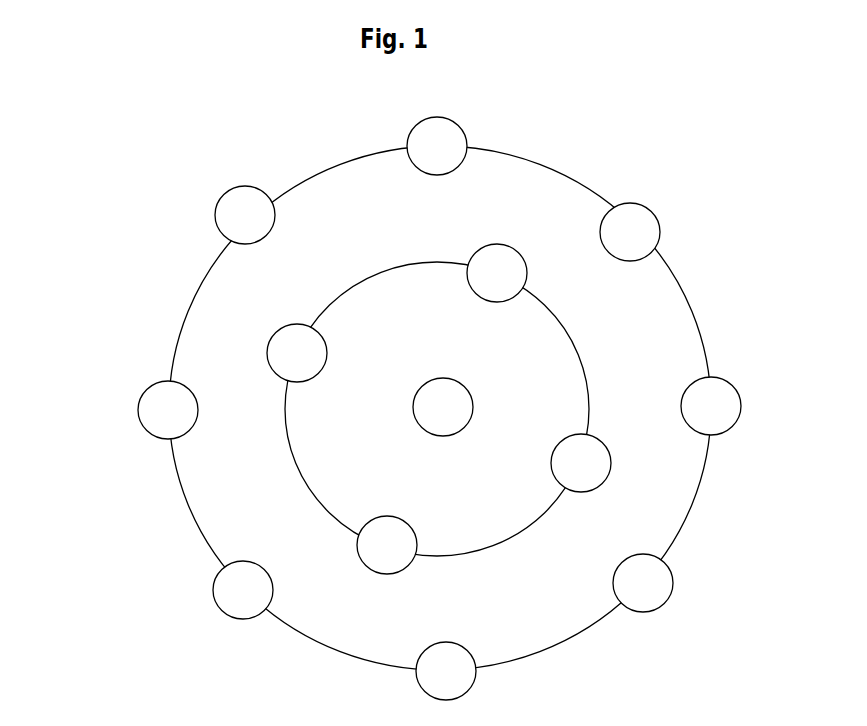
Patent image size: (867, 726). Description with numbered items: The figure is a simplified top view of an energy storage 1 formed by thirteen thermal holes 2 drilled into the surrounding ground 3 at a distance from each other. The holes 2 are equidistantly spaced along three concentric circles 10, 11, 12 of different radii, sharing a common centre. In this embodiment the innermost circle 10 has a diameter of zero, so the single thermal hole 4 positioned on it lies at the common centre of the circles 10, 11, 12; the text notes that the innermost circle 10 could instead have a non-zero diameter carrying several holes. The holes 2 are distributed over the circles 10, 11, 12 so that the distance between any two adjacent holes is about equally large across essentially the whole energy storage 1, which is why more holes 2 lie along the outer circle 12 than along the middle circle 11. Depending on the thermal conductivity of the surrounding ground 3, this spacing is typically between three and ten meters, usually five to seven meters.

The energy storage 1 is at (428, 397).
The thermal holes 2 is at (725, 377).
The surrounding ground 3 is at (32, 562).
The thermal hole 4 is at (442, 379).
The innermost concentric circle 10 is at (289, 315).
The middle circle 11 is at (325, 303).
The outer circle 12 is at (182, 320).